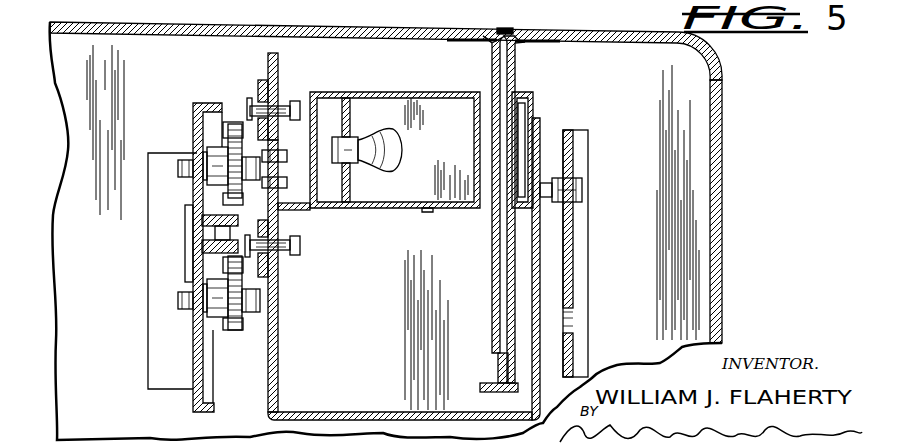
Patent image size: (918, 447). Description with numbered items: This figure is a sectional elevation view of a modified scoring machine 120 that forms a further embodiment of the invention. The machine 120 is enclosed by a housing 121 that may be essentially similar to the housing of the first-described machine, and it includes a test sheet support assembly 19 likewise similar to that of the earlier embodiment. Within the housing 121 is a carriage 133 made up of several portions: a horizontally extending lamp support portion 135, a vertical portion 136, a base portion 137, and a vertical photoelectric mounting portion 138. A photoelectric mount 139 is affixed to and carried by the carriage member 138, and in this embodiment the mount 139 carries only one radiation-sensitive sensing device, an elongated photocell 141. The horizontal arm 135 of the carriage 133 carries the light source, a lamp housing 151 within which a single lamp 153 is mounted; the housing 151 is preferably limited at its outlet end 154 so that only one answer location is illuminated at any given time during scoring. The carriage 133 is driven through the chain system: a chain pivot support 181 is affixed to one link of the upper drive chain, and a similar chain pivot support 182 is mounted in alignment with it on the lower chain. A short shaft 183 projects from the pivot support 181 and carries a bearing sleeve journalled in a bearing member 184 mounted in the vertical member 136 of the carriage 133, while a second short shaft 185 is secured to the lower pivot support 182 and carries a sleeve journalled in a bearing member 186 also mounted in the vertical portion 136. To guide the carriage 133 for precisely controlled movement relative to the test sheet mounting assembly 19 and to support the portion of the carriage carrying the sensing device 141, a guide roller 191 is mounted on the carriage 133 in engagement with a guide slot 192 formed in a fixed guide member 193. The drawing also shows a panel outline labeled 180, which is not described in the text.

The test sheet support assembly 19 is at (524, 76).
The scoring machine 120 is at (740, 180).
The housing 121 is at (733, 243).
The carriage 133 is at (277, 407).
The lamp support portion 135 is at (424, 212).
The vertical portion 136 is at (276, 300).
The base portion 137 is at (367, 413).
The photoelectric mounting portion 138 is at (542, 282).
The photoelectric mount 139 is at (535, 105).
The photocell 141 is at (518, 145).
The lamp housing 151 is at (418, 92).
The lamp 153 is at (402, 146).
The outlet end 154 is at (460, 105).
The panel 180 is at (192, 392).
The chain pivot support 181 is at (243, 105).
The chain pivot support 182 is at (248, 280).
The short shaft 183 is at (282, 104).
The bearing member 184 is at (268, 82).
The short shaft 185 is at (283, 258).
The bearing member 186 is at (282, 229).
The guide roller 191 is at (583, 193).
The guide slot 192 is at (575, 178).
The guide member 193 is at (572, 234).